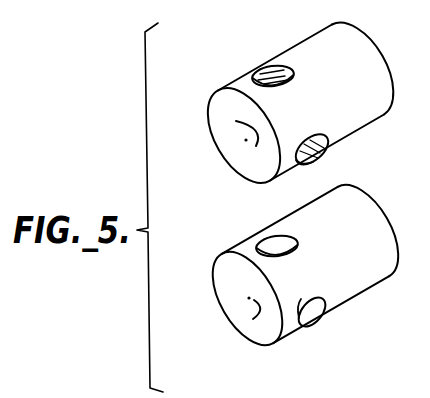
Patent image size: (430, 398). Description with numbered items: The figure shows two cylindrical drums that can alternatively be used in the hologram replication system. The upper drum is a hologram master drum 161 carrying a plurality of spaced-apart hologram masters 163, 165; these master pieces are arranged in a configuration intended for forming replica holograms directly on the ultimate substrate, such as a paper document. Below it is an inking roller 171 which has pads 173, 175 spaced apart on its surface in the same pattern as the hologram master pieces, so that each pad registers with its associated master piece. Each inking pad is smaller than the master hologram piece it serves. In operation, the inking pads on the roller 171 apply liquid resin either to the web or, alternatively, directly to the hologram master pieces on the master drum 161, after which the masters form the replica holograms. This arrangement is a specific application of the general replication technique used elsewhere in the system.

The hologram master drum 161 is at (230, 132).
The hologram master 163 is at (270, 72).
The hologram master 165 is at (325, 152).
The inking roller 171 is at (267, 329).
The pad 173 is at (268, 246).
The pad 175 is at (317, 319).